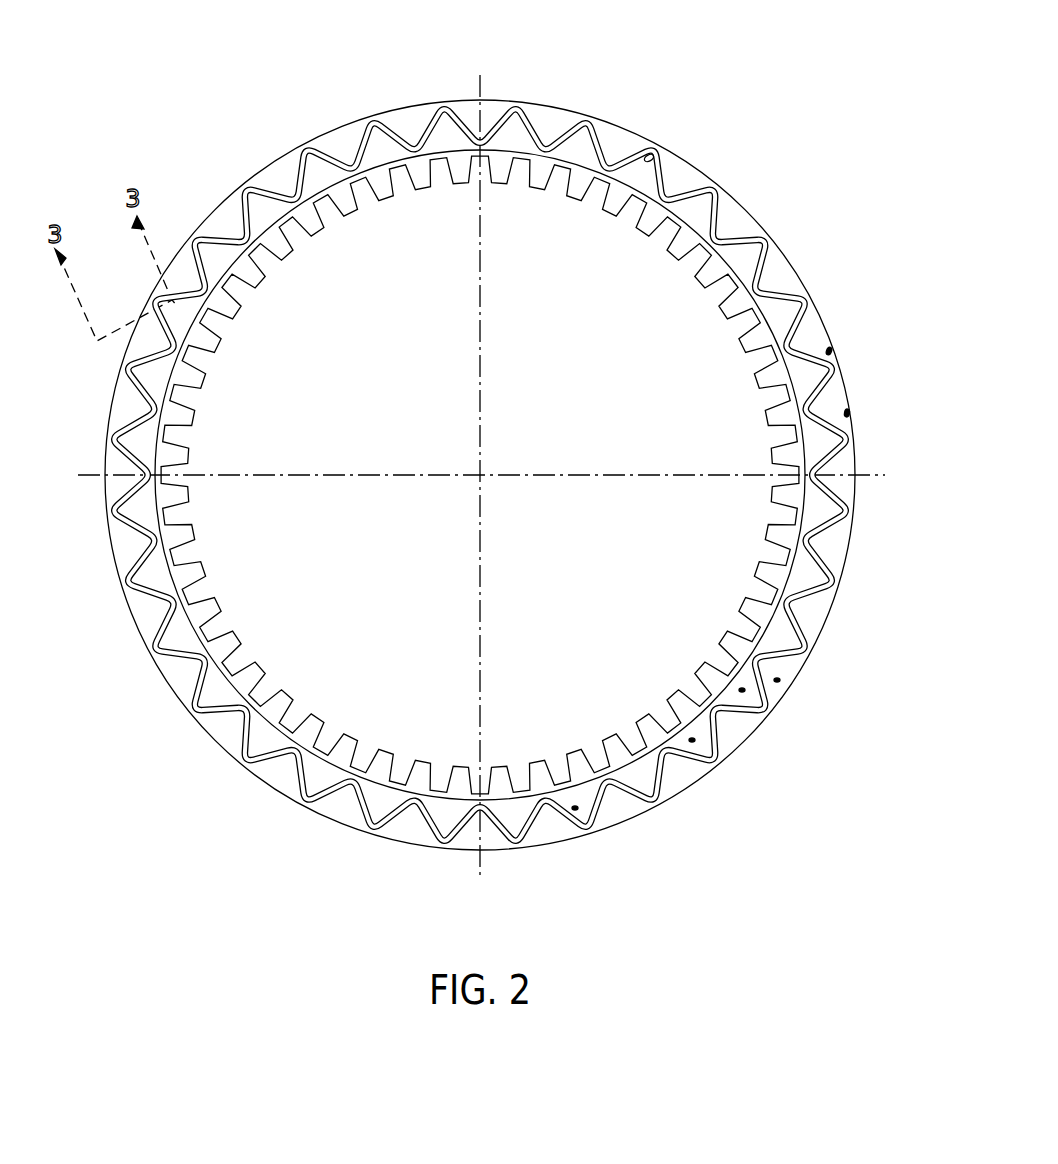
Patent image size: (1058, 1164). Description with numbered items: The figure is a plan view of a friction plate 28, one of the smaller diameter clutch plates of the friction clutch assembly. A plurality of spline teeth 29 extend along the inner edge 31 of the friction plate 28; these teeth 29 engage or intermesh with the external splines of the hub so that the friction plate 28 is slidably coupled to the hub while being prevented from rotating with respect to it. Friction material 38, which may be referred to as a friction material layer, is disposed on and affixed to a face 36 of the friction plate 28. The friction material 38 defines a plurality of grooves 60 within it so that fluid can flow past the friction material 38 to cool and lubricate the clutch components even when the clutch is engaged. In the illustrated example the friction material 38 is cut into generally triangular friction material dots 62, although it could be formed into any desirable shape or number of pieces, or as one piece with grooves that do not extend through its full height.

The friction plate 28 is at (652, 89).
The spline teeth 29 is at (480, 475).
The inner edge 31 is at (190, 417).
The face 36 is at (717, 192).
The friction material 38 is at (782, 277).
The grooves 60 is at (655, 153).
The friction material dots 62 is at (777, 680).